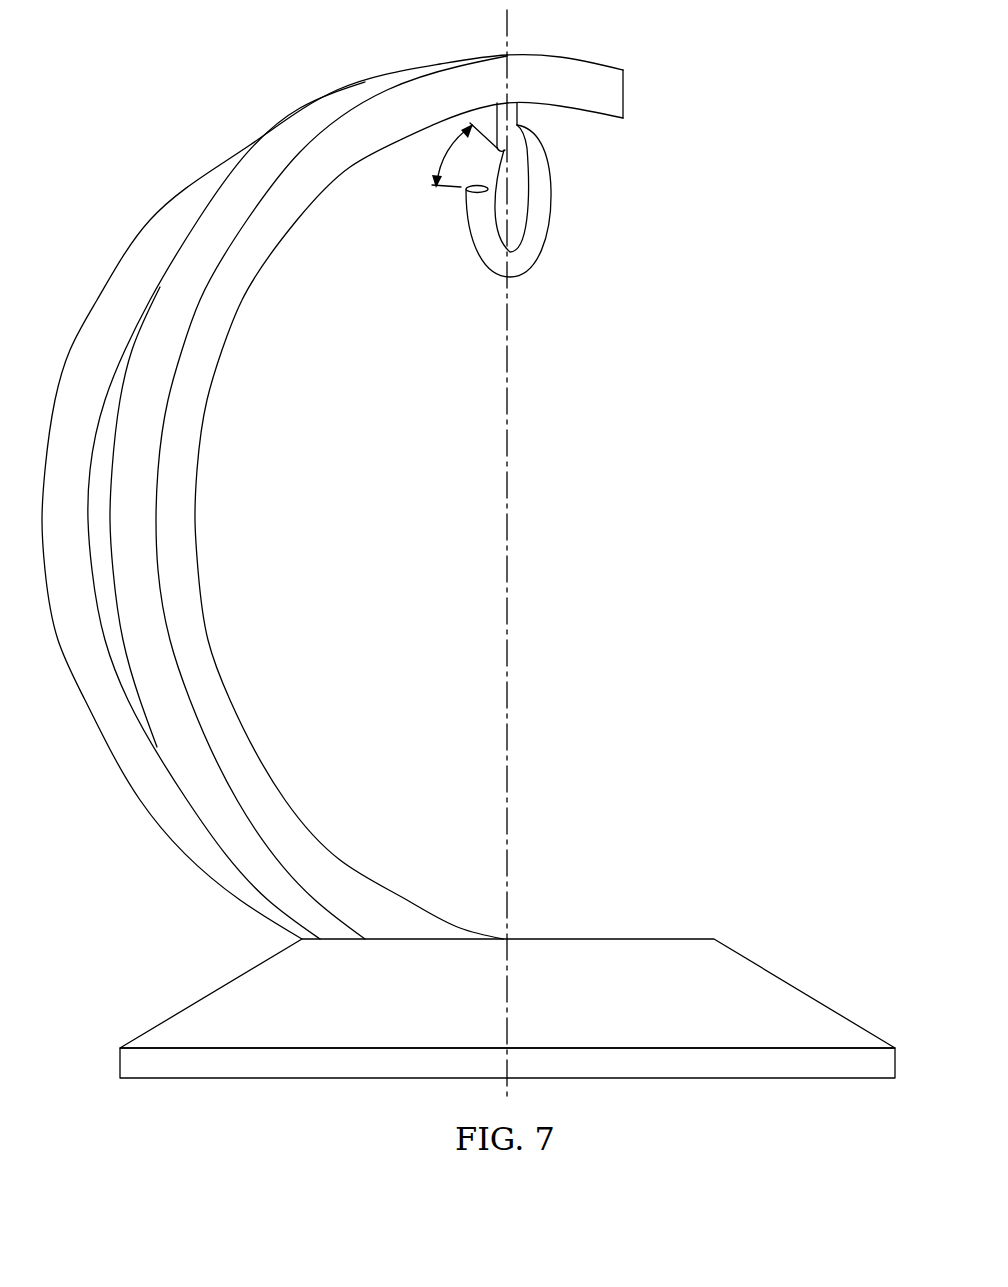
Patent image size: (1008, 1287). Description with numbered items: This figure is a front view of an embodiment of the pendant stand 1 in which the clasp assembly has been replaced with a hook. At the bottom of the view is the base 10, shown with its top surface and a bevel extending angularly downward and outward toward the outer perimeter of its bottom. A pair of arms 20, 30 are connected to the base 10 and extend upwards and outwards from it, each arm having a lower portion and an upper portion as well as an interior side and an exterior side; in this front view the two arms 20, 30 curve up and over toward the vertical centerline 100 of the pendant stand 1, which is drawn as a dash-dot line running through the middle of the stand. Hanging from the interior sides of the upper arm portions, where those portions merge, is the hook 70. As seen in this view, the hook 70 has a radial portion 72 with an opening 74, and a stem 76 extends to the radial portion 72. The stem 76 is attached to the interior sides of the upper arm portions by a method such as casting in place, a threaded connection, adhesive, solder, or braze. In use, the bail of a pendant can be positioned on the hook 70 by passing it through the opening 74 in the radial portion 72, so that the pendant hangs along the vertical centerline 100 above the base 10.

The pendant stand 1 is at (246, 47).
The base 10 is at (783, 957).
The arm 20 is at (84, 287).
The arm 30 is at (222, 485).
The hook 70 is at (574, 220).
The radial portion 72 is at (551, 199).
The opening 74 is at (447, 152).
The stem 76 is at (519, 118).
The vertical centerline 100 is at (512, 563).